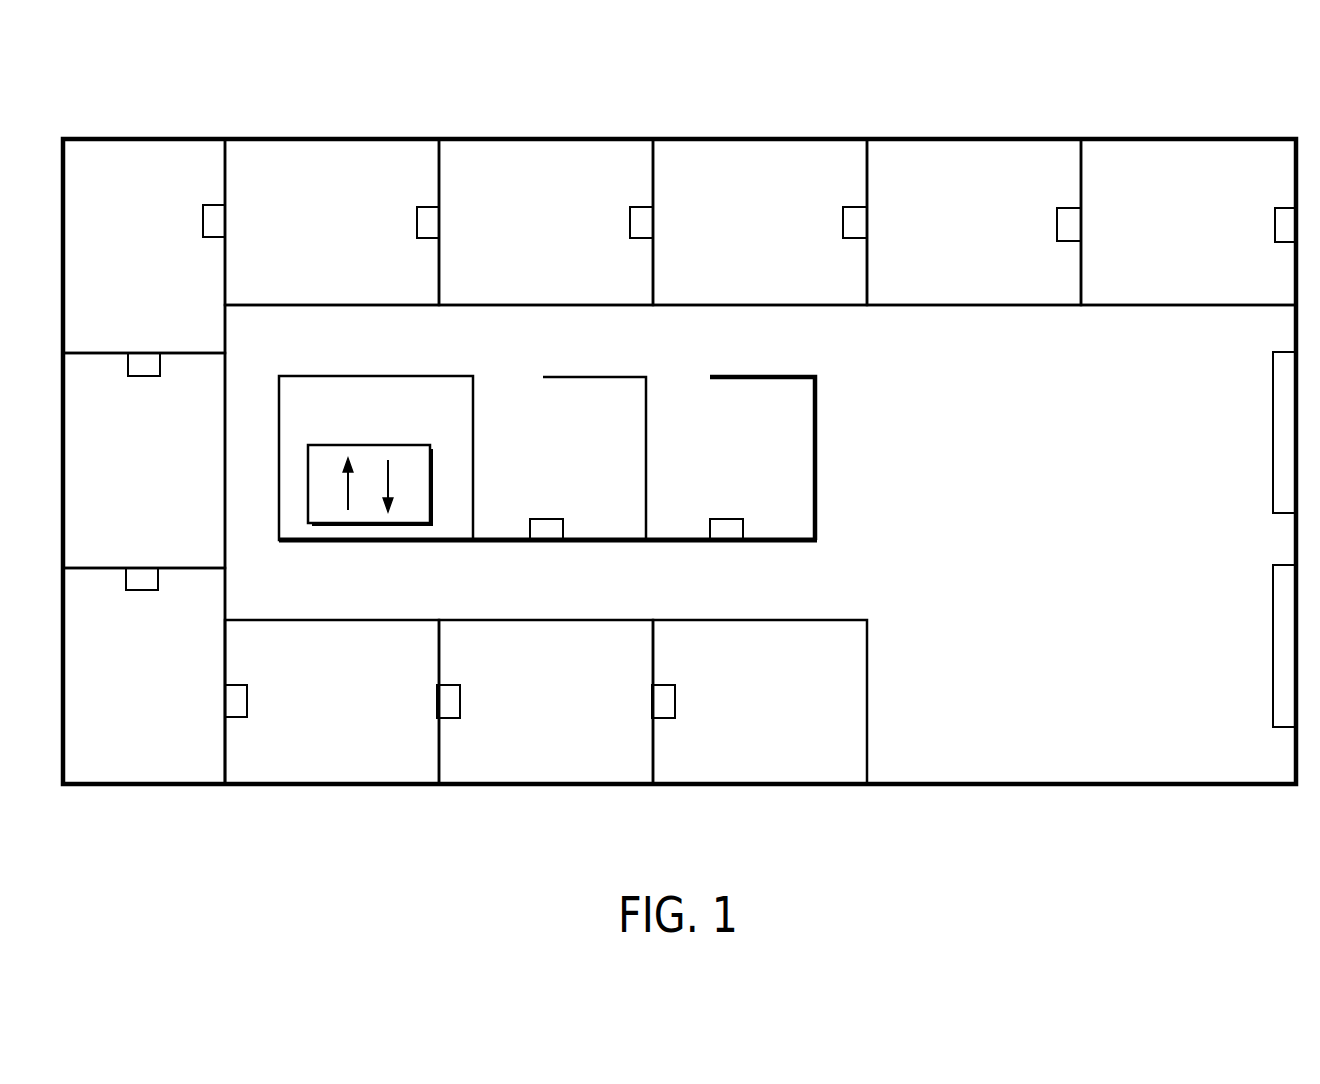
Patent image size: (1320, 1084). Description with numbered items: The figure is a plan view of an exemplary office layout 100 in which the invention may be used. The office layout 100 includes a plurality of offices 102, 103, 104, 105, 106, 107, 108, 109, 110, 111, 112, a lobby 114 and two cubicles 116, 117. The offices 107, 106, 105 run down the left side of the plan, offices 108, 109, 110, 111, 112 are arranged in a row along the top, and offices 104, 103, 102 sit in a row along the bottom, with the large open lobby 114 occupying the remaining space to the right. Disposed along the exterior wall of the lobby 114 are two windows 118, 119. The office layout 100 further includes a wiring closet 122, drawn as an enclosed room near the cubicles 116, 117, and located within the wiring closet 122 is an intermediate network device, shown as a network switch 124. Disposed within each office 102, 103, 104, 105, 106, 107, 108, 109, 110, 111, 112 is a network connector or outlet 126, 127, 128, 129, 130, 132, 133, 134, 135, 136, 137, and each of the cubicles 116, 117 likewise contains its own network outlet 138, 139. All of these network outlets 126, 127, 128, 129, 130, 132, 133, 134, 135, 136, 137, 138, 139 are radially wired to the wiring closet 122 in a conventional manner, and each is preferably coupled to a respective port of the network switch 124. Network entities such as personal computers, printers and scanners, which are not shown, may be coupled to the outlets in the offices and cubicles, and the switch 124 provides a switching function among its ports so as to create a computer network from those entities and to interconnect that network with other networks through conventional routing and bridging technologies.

The office layout 100 is at (1079, 113).
The office 102 is at (737, 715).
The office 103 is at (524, 715).
The office 104 is at (312, 715).
The office 105 is at (122, 693).
The office 106 is at (122, 475).
The office 107 is at (122, 253).
The office 108 is at (312, 237).
The office 109 is at (524, 237).
The office 110 is at (737, 237).
The office 111 is at (952, 237).
The office 112 is at (1164, 237).
The lobby 114 is at (1010, 477).
The cubicle 116 is at (524, 477).
The cubicle 117 is at (704, 477).
The window 118 is at (1273, 648).
The window 119 is at (1273, 433).
The wiring closet 122 is at (349, 427).
The network switch 124 is at (430, 503).
The network outlet 126 is at (662, 685).
The network outlet 127 is at (447, 685).
The network outlet 128 is at (235, 685).
The network outlet 129 is at (160, 578).
The network outlet 130 is at (161, 365).
The network outlet 132 is at (215, 205).
The network outlet 133 is at (428, 207).
The network outlet 134 is at (643, 207).
The network outlet 135 is at (856, 207).
The network outlet 136 is at (1069, 208).
The network outlet 137 is at (1285, 208).
The network outlet 138 is at (564, 525).
The network outlet 139 is at (744, 525).